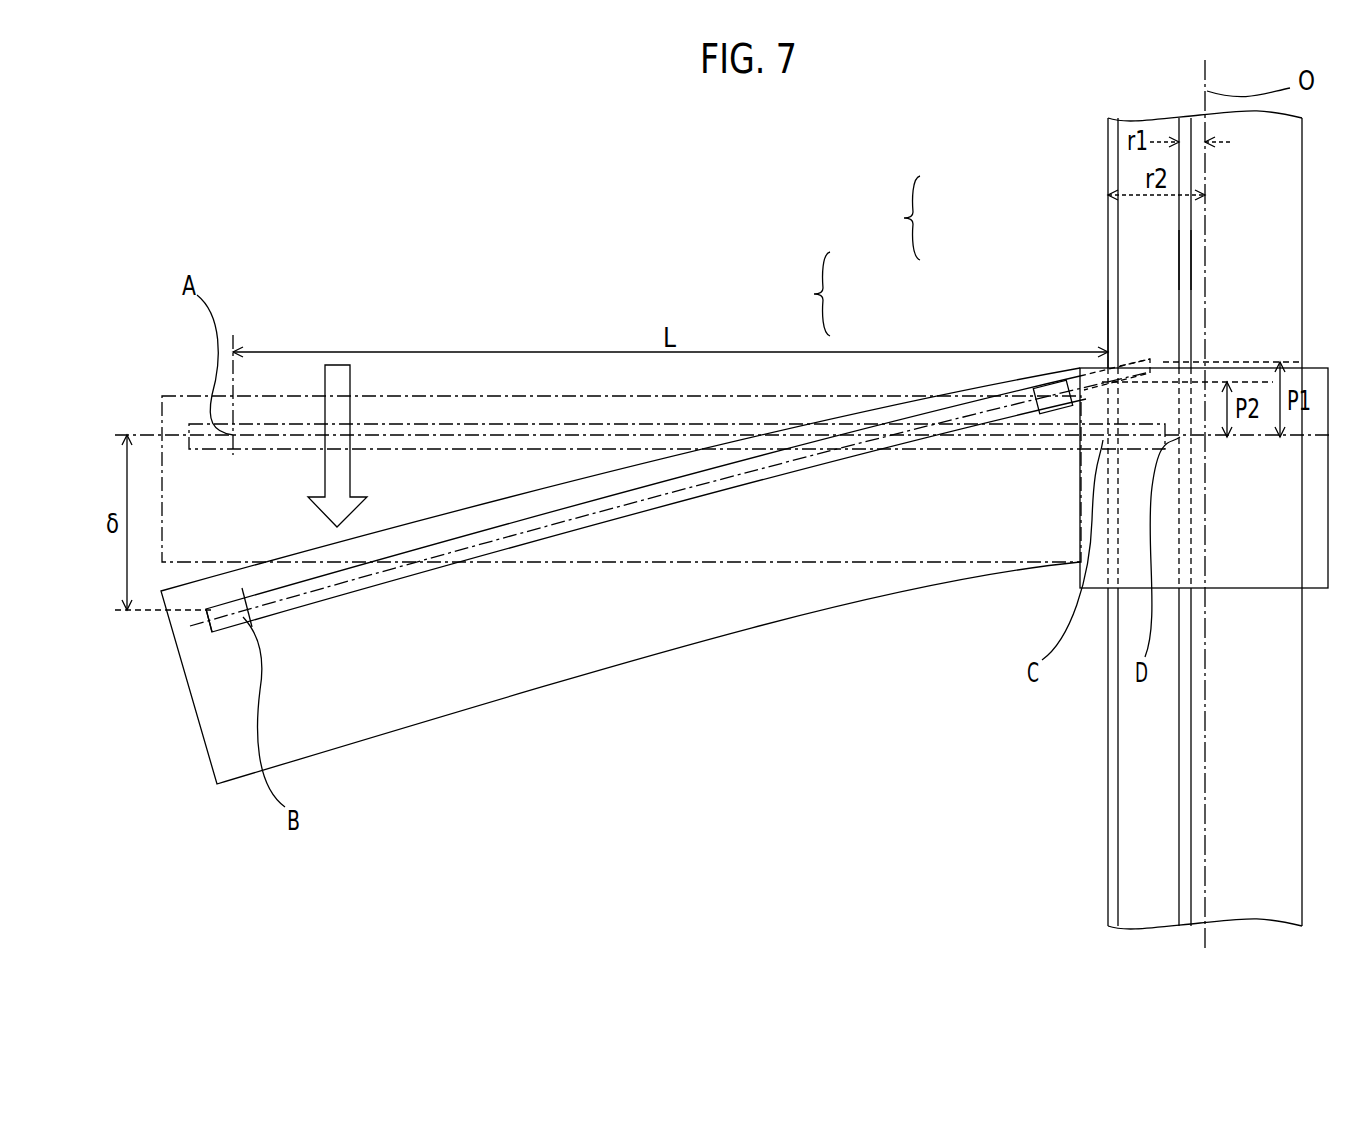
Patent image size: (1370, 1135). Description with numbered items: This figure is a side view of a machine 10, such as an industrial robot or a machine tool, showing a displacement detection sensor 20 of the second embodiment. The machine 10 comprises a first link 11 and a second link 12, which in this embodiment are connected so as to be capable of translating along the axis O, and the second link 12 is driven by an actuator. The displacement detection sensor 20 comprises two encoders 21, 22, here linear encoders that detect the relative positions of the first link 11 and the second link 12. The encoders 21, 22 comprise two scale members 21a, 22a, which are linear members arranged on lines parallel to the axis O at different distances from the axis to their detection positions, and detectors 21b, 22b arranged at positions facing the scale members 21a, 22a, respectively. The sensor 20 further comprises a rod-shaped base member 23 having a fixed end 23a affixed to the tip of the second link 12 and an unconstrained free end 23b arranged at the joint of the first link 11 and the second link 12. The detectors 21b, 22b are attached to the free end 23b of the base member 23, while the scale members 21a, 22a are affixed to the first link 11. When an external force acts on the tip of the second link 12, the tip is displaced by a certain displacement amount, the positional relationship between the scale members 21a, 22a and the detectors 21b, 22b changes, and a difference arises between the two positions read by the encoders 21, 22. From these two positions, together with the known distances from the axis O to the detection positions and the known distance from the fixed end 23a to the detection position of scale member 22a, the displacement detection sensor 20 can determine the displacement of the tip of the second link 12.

The machine 10 is at (1040, 163).
The first link 11 is at (1147, 760).
The second link 12 is at (350, 713).
The displacement detection sensor 20 is at (732, 215).
The encoder 21 is at (892, 218).
The scale member 21a is at (1185, 257).
The detector 21b is at (1108, 330).
The encoder 22 is at (803, 294).
The scale member 22a is at (1140, 358).
The detector 22b is at (1053, 393).
The base member 23 is at (640, 497).
The fixed end 23a is at (257, 610).
The free end 23b is at (1088, 388).